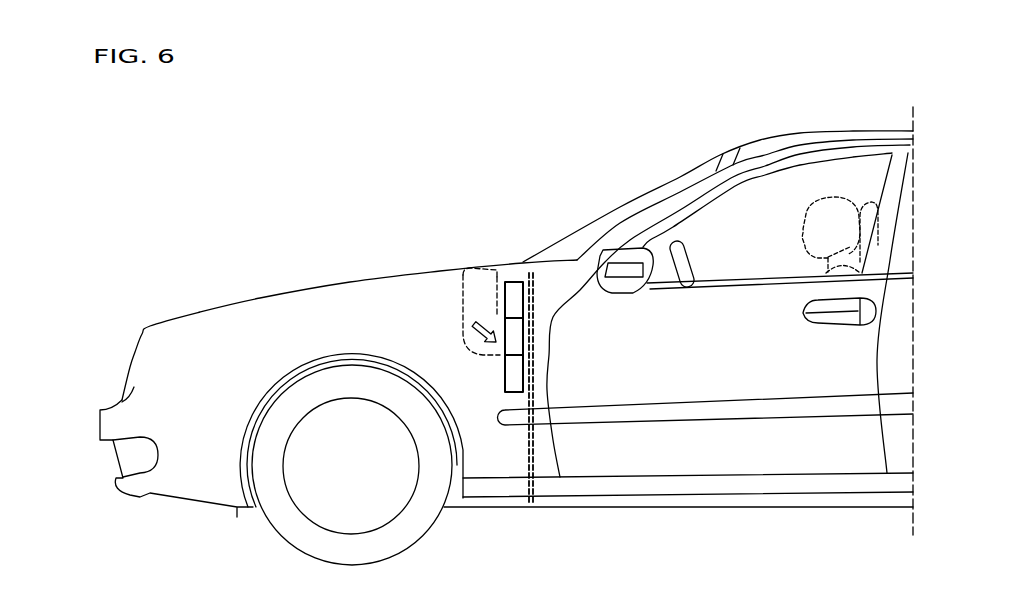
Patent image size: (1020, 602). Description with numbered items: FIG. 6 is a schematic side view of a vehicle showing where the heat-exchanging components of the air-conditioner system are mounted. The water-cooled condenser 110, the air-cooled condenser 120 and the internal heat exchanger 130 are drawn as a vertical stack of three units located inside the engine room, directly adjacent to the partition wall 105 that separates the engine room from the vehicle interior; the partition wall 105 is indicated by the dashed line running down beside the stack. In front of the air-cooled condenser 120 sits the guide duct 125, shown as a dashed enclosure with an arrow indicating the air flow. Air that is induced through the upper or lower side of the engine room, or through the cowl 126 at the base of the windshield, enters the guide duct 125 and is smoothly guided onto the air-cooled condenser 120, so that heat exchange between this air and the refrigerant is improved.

The partition wall 105 is at (537, 447).
The water-cooled condenser 110 is at (513, 302).
The air-cooled condenser 120 is at (513, 340).
The guide duct 125 is at (460, 322).
The cowl 126 is at (497, 272).
The internal heat exchanger 130 is at (513, 372).